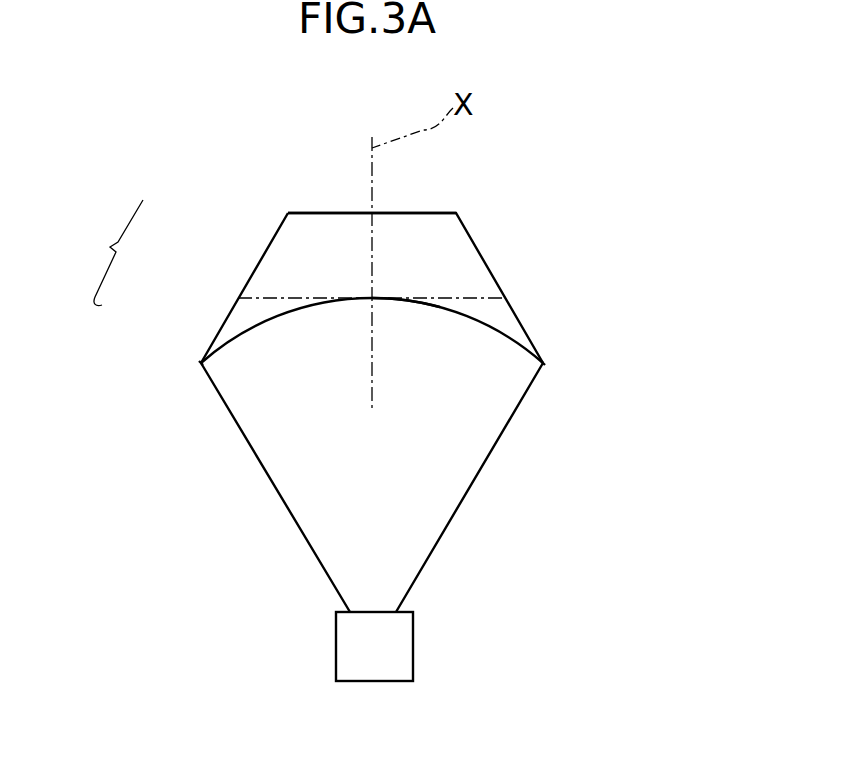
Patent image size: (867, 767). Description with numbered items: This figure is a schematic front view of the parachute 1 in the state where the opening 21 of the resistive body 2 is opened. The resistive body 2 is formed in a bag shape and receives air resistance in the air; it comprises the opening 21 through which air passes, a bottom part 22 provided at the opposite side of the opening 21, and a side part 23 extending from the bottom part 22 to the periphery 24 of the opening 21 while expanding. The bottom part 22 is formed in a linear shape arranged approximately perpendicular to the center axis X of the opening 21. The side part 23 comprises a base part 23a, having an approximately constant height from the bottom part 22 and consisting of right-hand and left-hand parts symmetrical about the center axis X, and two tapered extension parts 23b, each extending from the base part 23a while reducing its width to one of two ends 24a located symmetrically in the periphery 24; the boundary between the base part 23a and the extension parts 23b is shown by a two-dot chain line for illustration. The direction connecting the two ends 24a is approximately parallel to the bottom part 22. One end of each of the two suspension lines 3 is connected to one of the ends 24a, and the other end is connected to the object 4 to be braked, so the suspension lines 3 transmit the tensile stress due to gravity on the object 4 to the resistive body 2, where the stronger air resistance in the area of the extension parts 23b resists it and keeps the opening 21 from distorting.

The parachute 1 is at (374, 402).
The resistive body 2 is at (457, 212).
The suspension lines 3 is at (250, 458).
The object 4 is at (393, 646).
The opening 21 is at (410, 303).
The bottom part 22 is at (322, 212).
The side part 23 is at (356, 281).
The base part 23a is at (297, 250).
The extension parts 23b is at (248, 313).
The periphery 24 is at (253, 328).
The ends 24a is at (201, 363).